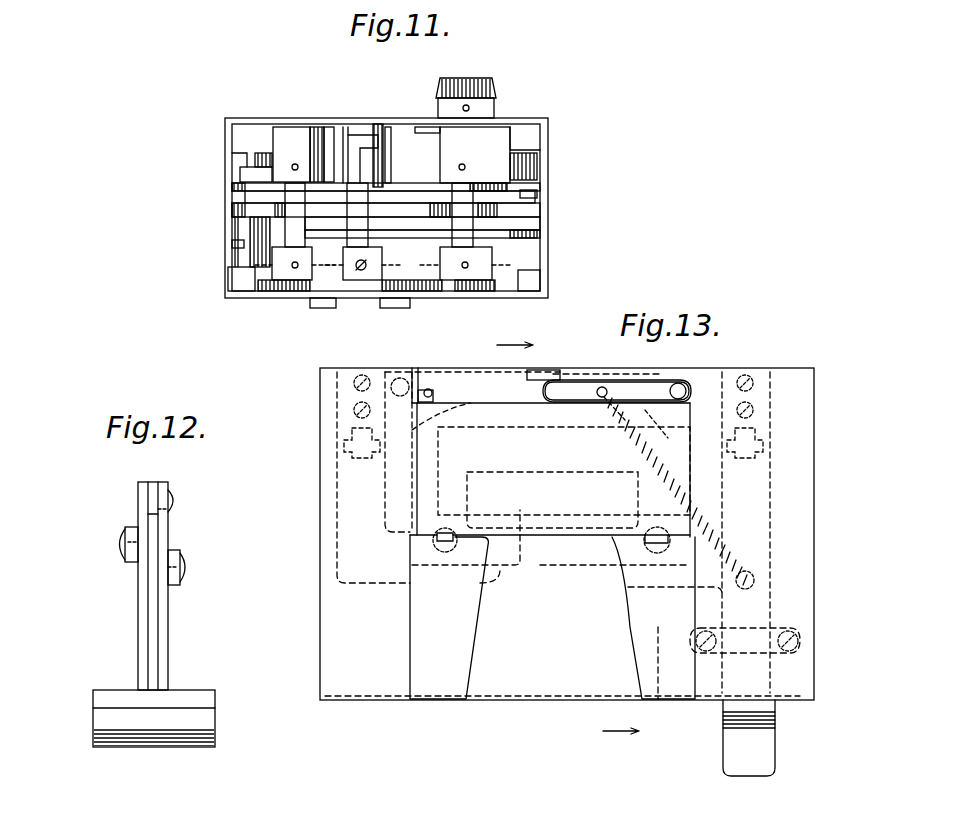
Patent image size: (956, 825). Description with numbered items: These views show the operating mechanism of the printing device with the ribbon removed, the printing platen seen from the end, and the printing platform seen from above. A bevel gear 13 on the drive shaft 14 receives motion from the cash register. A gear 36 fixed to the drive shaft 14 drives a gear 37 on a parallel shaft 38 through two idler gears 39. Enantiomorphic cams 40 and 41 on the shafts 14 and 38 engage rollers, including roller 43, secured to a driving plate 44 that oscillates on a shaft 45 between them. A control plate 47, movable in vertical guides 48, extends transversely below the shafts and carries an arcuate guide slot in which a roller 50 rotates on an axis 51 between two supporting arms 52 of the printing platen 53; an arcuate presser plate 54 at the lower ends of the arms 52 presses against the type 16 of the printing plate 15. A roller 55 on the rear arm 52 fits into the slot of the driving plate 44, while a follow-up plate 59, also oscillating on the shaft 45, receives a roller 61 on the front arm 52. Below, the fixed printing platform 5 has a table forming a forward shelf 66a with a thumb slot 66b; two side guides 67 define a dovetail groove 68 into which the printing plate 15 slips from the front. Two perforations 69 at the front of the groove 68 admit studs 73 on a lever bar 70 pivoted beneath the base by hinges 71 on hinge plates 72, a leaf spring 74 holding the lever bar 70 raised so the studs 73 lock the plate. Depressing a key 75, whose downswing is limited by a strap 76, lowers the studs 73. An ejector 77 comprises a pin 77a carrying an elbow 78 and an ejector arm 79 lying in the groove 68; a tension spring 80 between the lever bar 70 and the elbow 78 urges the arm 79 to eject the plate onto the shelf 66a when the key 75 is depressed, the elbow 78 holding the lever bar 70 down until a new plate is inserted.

In FIG. 13, the printing platform 5 is at (330, 445).
In FIG. 11, the bevel gear 13 is at (492, 88).
In FIG. 11, the drive shaft 14 is at (465, 238).
In FIG. 13, the drive shaft 14 is at (588, 535).
In FIG. 13, the printing plate 15 is at (580, 532).
In FIG. 13, the type 16 is at (522, 507).
In FIG. 11, the gear 36 is at (480, 292).
In FIG. 11, the gear 37 is at (273, 292).
In FIG. 11, the shaft 38 is at (275, 232).
In FIG. 11, the idler gears 39 is at (338, 295).
In FIG. 11, the cam 40 is at (495, 160).
In FIG. 11, the cam 41 is at (328, 172).
In FIG. 11, the roller 43 is at (253, 175).
In FIG. 11, the driving plate 44 is at (400, 200).
In FIG. 11, the shaft 45 is at (360, 215).
In FIG. 11, the control plate 47 is at (520, 215).
In FIG. 11, the vertical guides 48 is at (243, 200).
In FIG. 12, the roller 50 is at (155, 492).
In FIG. 12, the axis 51 is at (177, 502).
In FIG. 11, the supporting arms 52 is at (370, 212).
In FIG. 12, the supporting arms 52 is at (165, 535).
In FIG. 12, the printing platen 53 is at (172, 697).
In FIG. 11, the presser plate 54 is at (525, 172).
In FIG. 12, the presser plate 54 is at (153, 740).
In FIG. 12, the roller 55 is at (125, 532).
In FIG. 11, the follow-up plate 59 is at (510, 238).
In FIG. 12, the roller 61 is at (182, 582).
In FIG. 13, the shelf 66a is at (435, 688).
In FIG. 13, the thumb slot 66b is at (475, 622).
In FIG. 13, the side guides 67 is at (360, 690).
In FIG. 13, the dovetail groove 68 is at (417, 420).
In FIG. 13, the perforations 69 is at (445, 548).
In FIG. 13, the lever bar 70 is at (345, 535).
In FIG. 13, the hinges 71 is at (345, 455).
In FIG. 13, the hinge plates 72 is at (415, 435).
In FIG. 13, the studs 73 is at (435, 548).
In FIG. 13, the leaf spring 74 is at (536, 530).
In FIG. 13, the key 75 is at (753, 762).
In FIG. 13, the strap 76 is at (776, 625).
In FIG. 13, the ejector 77 is at (681, 493).
In FIG. 13, the pin 77a is at (686, 393).
In FIG. 13, the elbow 78 is at (590, 386).
In FIG. 13, the ejector arm 79 is at (660, 386).
In FIG. 13, the tension spring 80 is at (690, 505).